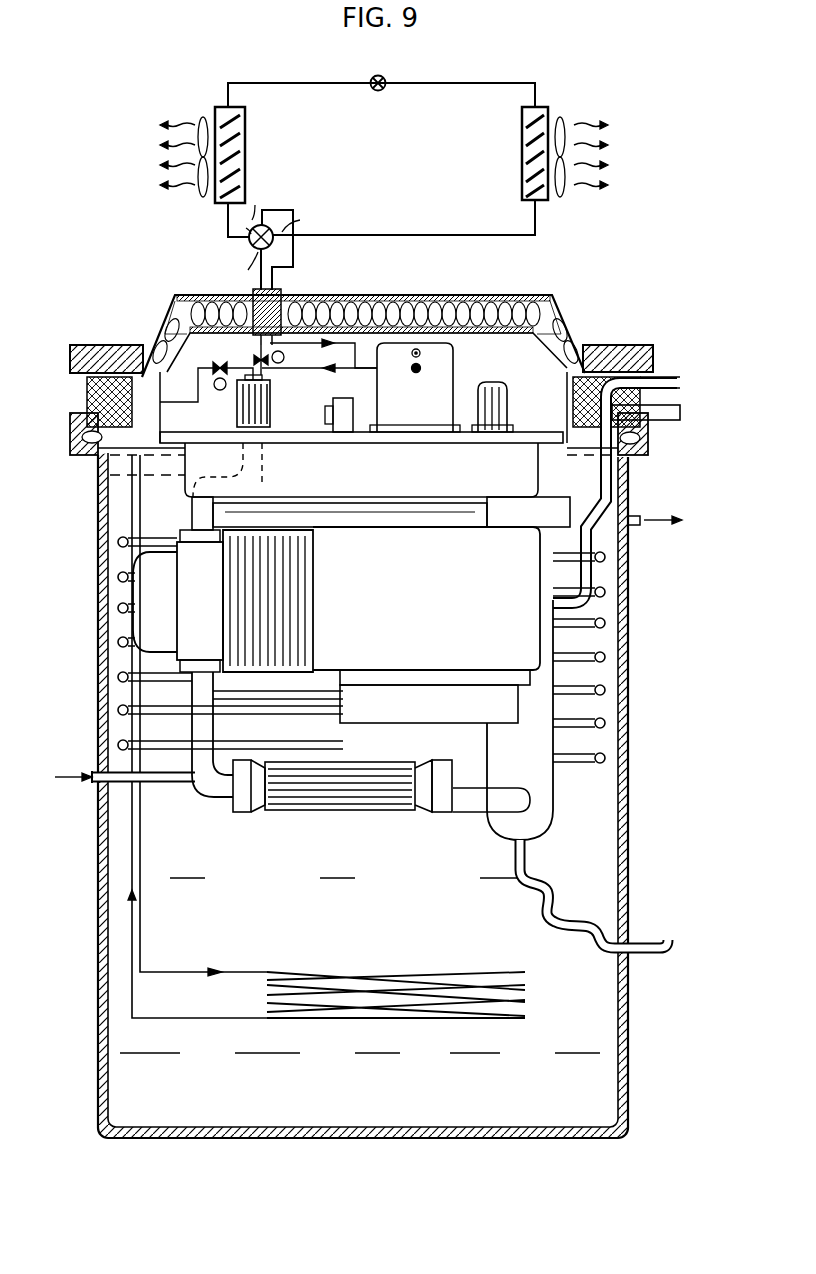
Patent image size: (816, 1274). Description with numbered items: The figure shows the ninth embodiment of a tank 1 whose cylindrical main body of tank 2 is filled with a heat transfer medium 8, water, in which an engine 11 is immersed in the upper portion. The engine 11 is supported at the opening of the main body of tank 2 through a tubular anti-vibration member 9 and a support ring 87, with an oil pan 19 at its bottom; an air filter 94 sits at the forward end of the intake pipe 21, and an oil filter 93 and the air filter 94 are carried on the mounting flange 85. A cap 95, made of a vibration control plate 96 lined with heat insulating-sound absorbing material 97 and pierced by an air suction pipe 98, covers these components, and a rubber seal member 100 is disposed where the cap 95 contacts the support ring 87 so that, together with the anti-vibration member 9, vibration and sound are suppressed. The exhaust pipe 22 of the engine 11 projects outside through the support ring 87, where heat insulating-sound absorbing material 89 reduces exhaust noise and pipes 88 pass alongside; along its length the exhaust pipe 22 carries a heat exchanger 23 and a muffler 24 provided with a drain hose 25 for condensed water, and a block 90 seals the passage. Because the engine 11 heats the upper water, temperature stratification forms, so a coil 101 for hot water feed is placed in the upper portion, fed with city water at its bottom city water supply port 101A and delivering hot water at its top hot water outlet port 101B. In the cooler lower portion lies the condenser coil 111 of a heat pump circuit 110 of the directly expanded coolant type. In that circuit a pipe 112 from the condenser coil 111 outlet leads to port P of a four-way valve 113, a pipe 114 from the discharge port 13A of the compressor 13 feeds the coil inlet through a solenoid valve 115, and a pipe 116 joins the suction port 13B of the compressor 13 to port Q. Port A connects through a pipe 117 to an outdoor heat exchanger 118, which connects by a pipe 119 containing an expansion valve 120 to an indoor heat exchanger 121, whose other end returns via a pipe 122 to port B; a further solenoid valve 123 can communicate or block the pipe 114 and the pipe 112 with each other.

The tank 1 is at (645, 850).
The main body of tank 2 is at (628, 902).
The heat transfer medium 8 is at (623, 1008).
The anti-vibration member 9 is at (650, 443).
The engine 11 is at (318, 605).
The compressor 13 is at (415, 443).
The discharge port 13A is at (418, 373).
The suction port 13B is at (421, 353).
The oil pan 19 is at (508, 726).
The intake pipe 21 is at (190, 520).
The exhaust pipe 22 is at (622, 496).
The heat exchanger 23 is at (336, 812).
The muffler 24 is at (556, 802).
The drain hose 25 is at (547, 910).
The mounting flange 85 is at (350, 446).
The support ring 87 is at (708, 372).
The upper pipe 88 is at (674, 384).
The heat insulating-sound absorbing material 89 is at (674, 412).
The seal block 90 is at (574, 403).
The oil filter 93 is at (504, 386).
The air filter 94 is at (275, 438).
The cap 95 is at (575, 262).
The vibration control plate 96 is at (589, 304).
The heat insulating-sound absorbing material 97 is at (566, 306).
The air suction pipe 98 is at (283, 294).
The seal member 100 is at (616, 344).
The coil for hot water feed 101 is at (118, 612).
The city water supply port 101A is at (80, 771).
The hot water outlet port 101B is at (640, 526).
The heat pump circuit 110 is at (456, 75).
The condenser coil 111 is at (320, 970).
The pipe 112 is at (159, 322).
The four-way valve 113 is at (248, 242).
The pipe 114 is at (375, 373).
The solenoid valve 115 is at (217, 391).
The pipe 116 is at (340, 373).
The pipe 117 is at (228, 217).
The outdoor heat exchanger 118 is at (220, 116).
The pipe 119 is at (302, 83).
The expansion valve 120 is at (378, 91).
The indoor heat exchanger 121 is at (544, 109).
The pipe 122 is at (458, 235).
The solenoid valve 123 is at (285, 357).